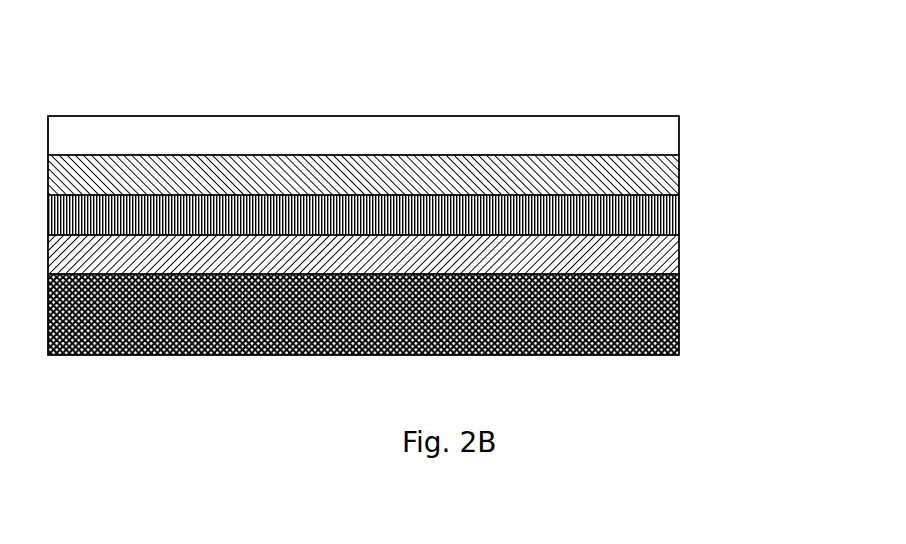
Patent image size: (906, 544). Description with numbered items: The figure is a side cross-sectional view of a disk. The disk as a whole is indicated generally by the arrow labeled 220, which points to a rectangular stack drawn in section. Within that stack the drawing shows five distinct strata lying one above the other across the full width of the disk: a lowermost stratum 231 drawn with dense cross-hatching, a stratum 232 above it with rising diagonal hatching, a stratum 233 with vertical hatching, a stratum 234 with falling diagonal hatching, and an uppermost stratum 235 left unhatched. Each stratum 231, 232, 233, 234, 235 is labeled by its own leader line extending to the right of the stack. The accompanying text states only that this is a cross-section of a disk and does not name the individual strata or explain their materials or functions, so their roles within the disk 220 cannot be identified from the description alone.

The layered structure 220 is at (294, 62).
The substrate layer 231 is at (679, 313).
The second layer 232 is at (679, 253).
The third layer 233 is at (679, 215).
The fourth layer 234 is at (679, 175).
The top layer 235 is at (679, 135).